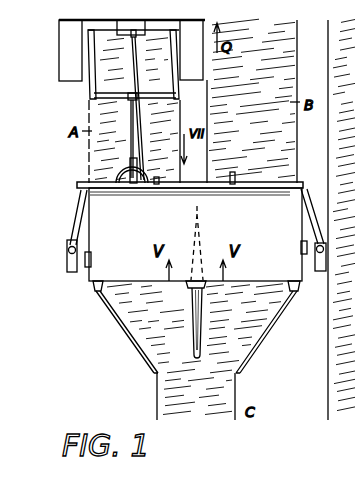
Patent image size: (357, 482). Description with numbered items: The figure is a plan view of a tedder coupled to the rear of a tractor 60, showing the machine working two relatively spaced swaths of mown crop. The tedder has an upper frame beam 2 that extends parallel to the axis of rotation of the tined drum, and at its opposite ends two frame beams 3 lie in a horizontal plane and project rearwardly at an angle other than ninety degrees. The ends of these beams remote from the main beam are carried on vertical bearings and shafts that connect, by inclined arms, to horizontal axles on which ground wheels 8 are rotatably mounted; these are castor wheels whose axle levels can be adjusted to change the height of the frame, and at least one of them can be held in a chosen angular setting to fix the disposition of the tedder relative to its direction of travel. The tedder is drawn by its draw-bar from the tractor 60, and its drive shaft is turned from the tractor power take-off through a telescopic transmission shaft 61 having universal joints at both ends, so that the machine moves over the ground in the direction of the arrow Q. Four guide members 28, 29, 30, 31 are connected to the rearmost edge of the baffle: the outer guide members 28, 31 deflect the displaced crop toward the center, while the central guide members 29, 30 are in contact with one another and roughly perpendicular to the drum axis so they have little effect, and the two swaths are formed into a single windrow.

The upper frame beam 2 is at (255, 185).
The frame beams 3 is at (80, 210).
The ground wheels 8 is at (72, 272).
The guide member 28 is at (132, 343).
The guide member 29 is at (191, 323).
The guide member 30 is at (202, 324).
The guide member 31 is at (258, 343).
The tractor 60 is at (73, 80).
The telescopic transmission shaft 61 is at (138, 76).